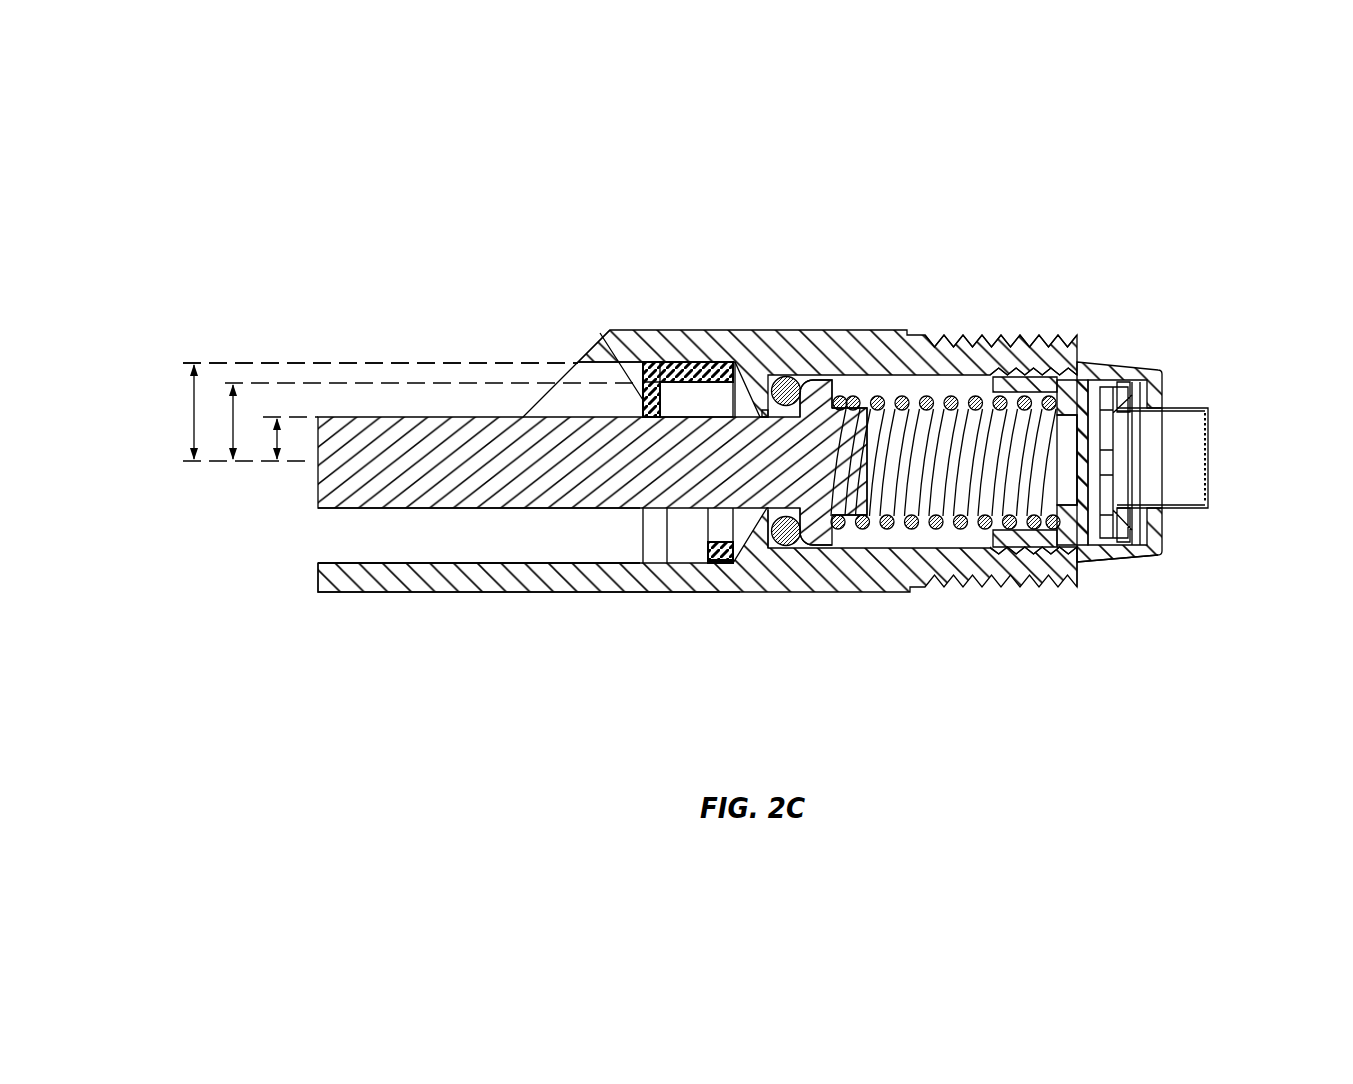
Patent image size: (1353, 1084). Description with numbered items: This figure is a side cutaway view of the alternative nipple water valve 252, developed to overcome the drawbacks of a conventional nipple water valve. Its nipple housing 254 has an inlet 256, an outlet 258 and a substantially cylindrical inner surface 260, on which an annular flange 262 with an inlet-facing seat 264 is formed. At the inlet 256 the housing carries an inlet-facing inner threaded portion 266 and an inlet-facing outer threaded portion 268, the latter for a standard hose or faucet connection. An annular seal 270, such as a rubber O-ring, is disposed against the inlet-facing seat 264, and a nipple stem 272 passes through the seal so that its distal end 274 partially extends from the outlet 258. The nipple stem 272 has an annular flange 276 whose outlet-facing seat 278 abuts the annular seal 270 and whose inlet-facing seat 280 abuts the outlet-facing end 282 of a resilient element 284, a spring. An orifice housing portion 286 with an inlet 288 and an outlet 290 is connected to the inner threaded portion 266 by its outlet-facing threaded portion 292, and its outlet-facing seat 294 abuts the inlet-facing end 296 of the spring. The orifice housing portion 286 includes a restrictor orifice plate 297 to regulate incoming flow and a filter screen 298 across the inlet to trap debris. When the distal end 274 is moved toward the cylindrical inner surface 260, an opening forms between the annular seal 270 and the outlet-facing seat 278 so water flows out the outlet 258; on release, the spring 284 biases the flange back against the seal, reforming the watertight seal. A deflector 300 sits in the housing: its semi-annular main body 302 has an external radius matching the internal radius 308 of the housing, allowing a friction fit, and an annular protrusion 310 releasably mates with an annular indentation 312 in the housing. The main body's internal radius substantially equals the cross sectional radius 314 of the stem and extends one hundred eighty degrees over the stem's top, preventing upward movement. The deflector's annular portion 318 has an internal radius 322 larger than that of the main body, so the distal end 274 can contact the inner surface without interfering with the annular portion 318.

The alternative nipple water valve 252 is at (432, 224).
The nipple housing 254 is at (693, 330).
The inlet 256 is at (877, 535).
The outlet 258 is at (337, 548).
The cylindrical inner surface 260 is at (325, 580).
The annular flange 262 is at (792, 377).
The inlet-facing seat 264 is at (768, 396).
The inlet-facing inner threaded portion 266 is at (1018, 372).
The inlet-facing outer threaded portion 268 is at (990, 333).
The annular seal 270 is at (766, 556).
The nipple stem 272 is at (425, 416).
The distal end 274 is at (318, 492).
The annular flange 276 is at (790, 547).
The outlet-facing seat 278 is at (808, 548).
The inlet-facing seat 280 is at (840, 530).
The outlet-facing end 282 is at (858, 530).
The resilient element 284 is at (927, 396).
The orifice housing portion 286 is at (1128, 558).
The inlet 288 is at (1110, 371).
The outlet 290 is at (1020, 577).
The outlet-facing threaded portion 292 is at (1033, 550).
The outlet-facing seat 294 is at (1053, 562).
The inlet-facing end 296 is at (1072, 384).
The restrictor orifice plate 297 is at (1150, 526).
The filter screen 298 is at (1209, 474).
The deflector 300 is at (708, 362).
The main body 302 is at (640, 362).
The internal radius 308 is at (192, 405).
The annular protrusion 310 is at (652, 361).
The annular indentation 312 is at (663, 361).
The cross sectional radius 314 is at (274, 455).
The annular portion 318 is at (697, 565).
The internal radius 322 is at (230, 448).